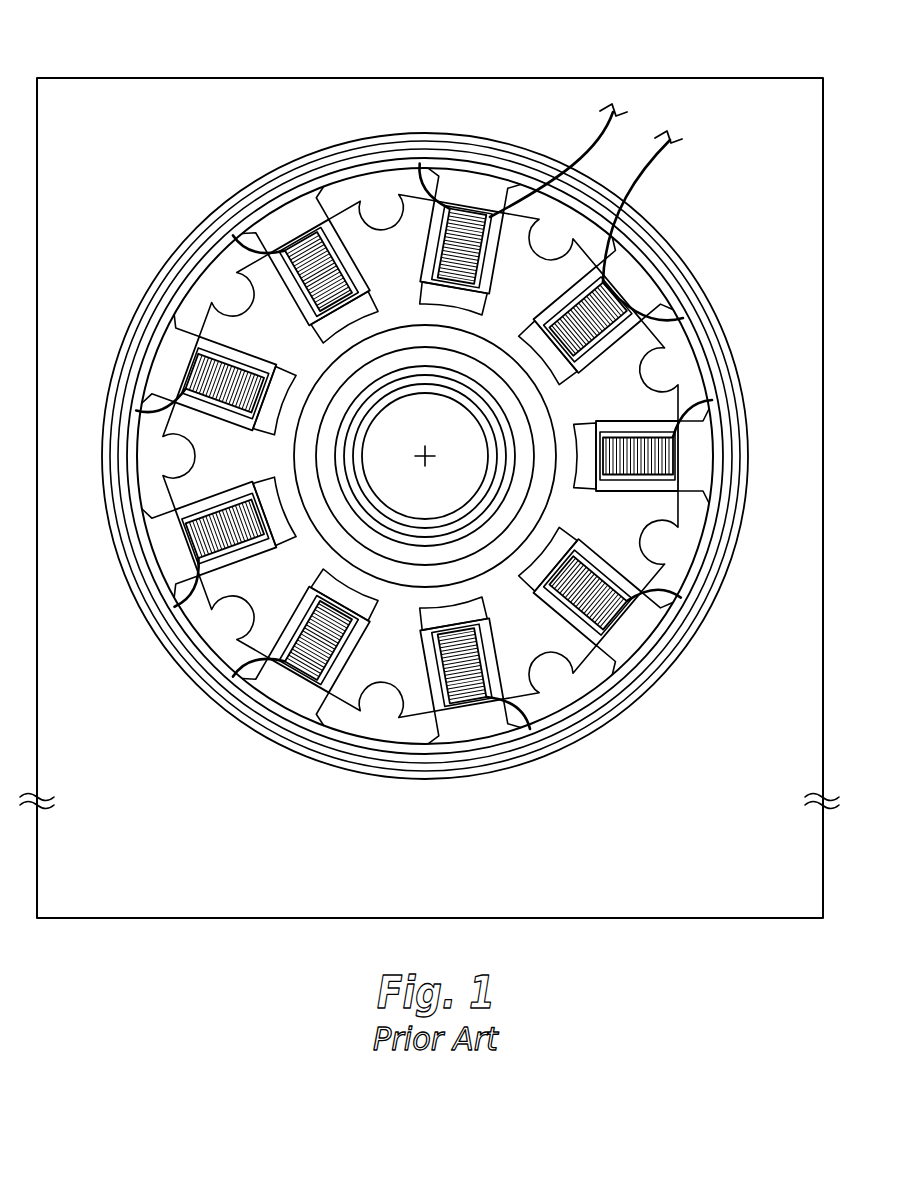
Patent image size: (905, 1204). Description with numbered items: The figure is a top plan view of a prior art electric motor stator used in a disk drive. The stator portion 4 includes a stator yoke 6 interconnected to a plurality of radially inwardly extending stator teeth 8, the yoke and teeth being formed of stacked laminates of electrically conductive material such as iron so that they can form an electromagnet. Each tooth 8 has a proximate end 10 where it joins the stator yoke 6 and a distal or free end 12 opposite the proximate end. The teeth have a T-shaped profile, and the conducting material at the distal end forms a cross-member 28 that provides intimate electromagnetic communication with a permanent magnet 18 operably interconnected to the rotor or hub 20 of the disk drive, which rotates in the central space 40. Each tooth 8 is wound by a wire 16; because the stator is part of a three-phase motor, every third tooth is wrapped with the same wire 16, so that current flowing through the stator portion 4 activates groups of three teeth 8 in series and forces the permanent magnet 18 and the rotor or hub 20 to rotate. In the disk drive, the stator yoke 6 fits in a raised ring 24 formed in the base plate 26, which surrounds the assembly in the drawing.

The stator portion 4 is at (73, 357).
The stator yoke 6 is at (710, 478).
The stator teeth 8 is at (623, 453).
The proximate end 10 is at (340, 233).
The distal end 12 is at (369, 263).
The wire 16 is at (600, 592).
The permanent magnet 18 is at (530, 503).
The rotor or hub 20 is at (487, 547).
The raised ring 24 is at (116, 435).
The base plate 26 is at (138, 166).
The cross-member 28 is at (489, 305).
The space 40 is at (445, 433).